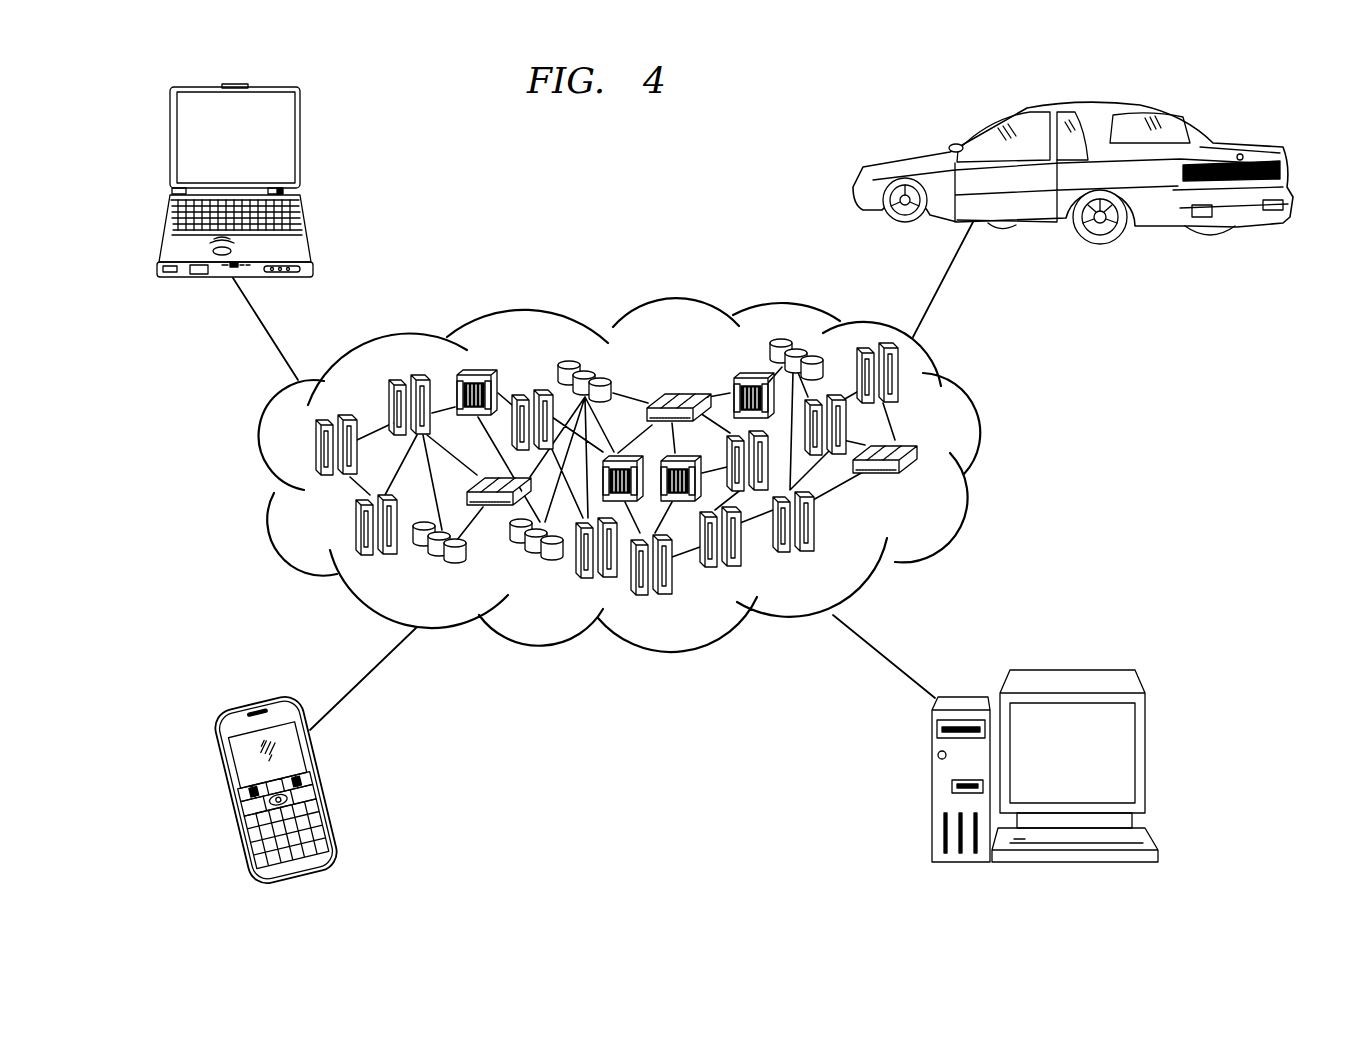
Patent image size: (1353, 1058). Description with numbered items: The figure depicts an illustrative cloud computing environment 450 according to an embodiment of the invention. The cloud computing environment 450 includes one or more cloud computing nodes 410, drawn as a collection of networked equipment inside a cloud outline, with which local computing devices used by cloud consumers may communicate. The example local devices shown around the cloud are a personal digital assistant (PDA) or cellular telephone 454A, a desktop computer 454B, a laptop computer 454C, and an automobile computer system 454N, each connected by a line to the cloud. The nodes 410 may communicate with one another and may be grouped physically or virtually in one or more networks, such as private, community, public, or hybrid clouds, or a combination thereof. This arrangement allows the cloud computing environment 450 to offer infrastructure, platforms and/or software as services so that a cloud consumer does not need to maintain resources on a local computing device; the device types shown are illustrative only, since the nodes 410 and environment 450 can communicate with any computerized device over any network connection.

The cloud computing environment 450 is at (973, 400).
The cloud computing nodes 410 is at (928, 485).
The personal digital assistant (PDA) or cellular telephone 454A is at (220, 778).
The desktop computer 454B is at (1072, 670).
The laptop computer 454C is at (170, 132).
The automobile computer system 454N is at (1253, 143).